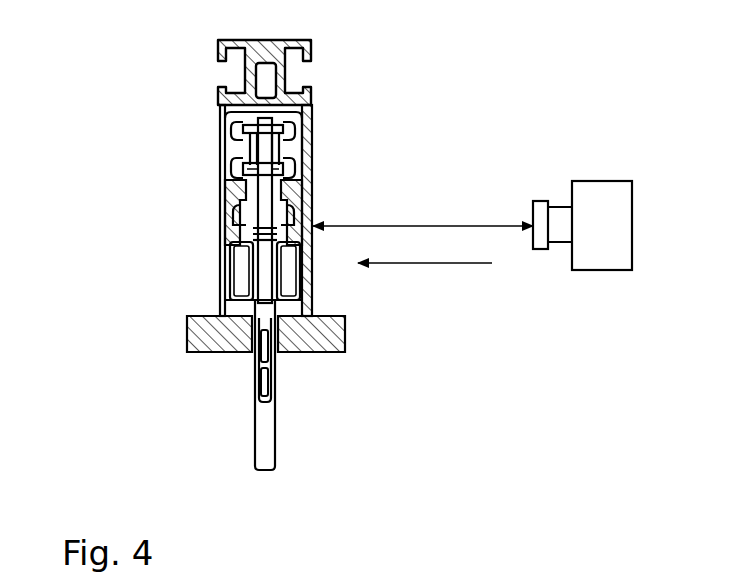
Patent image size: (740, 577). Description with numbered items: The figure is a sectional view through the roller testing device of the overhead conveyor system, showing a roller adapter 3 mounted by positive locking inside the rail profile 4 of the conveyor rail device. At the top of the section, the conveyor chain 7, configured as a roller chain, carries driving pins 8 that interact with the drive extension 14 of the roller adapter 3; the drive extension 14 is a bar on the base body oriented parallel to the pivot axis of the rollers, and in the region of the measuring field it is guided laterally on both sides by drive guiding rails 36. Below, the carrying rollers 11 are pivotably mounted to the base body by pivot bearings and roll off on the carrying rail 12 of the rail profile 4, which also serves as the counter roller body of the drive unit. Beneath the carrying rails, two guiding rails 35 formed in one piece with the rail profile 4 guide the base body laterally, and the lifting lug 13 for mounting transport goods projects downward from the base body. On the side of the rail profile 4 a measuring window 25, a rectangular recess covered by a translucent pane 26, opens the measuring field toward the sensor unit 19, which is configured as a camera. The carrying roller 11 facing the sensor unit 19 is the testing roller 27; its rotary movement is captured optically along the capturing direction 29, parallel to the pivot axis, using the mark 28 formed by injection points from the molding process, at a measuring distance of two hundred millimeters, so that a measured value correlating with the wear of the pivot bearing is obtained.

The roller adapter 3 is at (254, 440).
The rail profile 4 is at (228, 73).
The conveyor chain 7 is at (222, 143).
The driving pins 8 is at (222, 112).
The carrying roller 11 is at (226, 272).
The carrying rail 12 is at (220, 290).
The lifting lug 13 is at (265, 402).
The drive extension 14 is at (222, 193).
The sensor unit 19 is at (590, 255).
The measuring window 25 is at (318, 244).
The translucent pane 26 is at (312, 143).
The testing roller 27 is at (388, 135).
The mark 28 is at (232, 250).
The capturing direction 29 is at (460, 263).
The guiding rails 35 is at (262, 380).
The drive guiding rails 36 is at (226, 214).